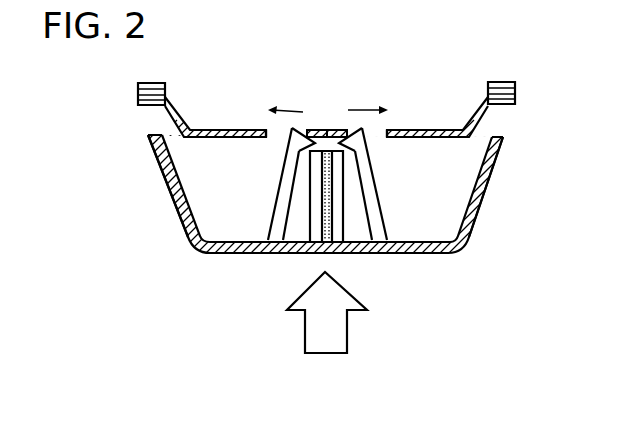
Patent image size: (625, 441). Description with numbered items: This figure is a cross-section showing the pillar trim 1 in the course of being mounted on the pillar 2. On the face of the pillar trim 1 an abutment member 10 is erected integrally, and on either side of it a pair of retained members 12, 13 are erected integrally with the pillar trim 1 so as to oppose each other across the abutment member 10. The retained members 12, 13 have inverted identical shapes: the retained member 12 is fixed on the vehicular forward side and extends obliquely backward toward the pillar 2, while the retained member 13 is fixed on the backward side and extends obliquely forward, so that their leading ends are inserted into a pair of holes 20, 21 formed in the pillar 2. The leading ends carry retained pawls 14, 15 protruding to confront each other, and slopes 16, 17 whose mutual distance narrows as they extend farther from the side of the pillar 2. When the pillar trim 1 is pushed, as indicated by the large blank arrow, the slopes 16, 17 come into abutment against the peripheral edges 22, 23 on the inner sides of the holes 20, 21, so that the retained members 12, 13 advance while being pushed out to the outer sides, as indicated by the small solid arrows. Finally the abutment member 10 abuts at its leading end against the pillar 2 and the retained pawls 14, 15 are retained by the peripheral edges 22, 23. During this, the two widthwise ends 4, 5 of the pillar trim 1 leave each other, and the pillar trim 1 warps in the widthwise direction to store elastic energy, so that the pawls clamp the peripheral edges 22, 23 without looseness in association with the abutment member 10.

The pillar trim 1 is at (217, 254).
The pillar 2 is at (480, 113).
The widthwise end 4 is at (152, 145).
The widthwise end 5 is at (497, 147).
The abutment member 10 is at (338, 200).
The retained member 12 is at (262, 212).
The retained member 13 is at (390, 213).
The retained pawl 14 is at (283, 245).
The retained pawl 15 is at (372, 242).
The slope 16 is at (292, 126).
The slope 17 is at (360, 125).
The hole 20 is at (270, 139).
The hole 21 is at (387, 139).
The peripheral edge 22 is at (312, 128).
The peripheral edge 23 is at (341, 128).